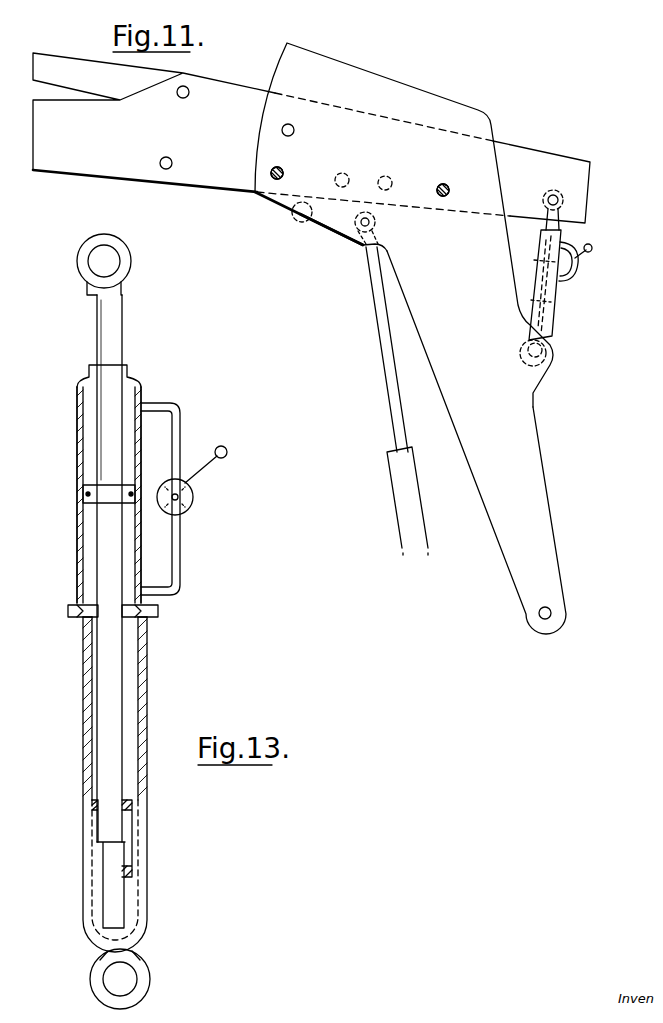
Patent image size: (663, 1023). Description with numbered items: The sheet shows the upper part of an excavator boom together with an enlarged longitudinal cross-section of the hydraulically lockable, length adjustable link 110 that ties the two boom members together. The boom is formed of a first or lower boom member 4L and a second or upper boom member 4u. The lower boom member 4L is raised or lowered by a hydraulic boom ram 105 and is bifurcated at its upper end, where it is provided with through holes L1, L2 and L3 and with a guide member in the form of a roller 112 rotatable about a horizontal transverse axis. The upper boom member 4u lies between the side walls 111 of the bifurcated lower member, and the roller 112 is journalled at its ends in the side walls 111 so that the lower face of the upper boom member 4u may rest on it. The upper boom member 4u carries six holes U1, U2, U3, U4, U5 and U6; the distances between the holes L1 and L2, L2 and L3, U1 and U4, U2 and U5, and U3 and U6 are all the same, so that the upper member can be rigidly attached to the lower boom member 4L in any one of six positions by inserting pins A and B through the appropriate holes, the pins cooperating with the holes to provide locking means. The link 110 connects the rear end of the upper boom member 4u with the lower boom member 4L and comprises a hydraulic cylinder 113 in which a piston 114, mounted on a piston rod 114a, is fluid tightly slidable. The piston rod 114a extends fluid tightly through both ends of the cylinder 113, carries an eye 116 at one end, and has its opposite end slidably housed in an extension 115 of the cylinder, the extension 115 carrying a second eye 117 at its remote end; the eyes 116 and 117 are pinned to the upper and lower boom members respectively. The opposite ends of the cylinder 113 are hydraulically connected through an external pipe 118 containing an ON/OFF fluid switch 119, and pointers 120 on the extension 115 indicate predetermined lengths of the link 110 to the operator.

In FIG. 11, the upper boom member 4u is at (218, 93).
In FIG. 11, the lower boom member 4L is at (522, 508).
In FIG. 11, the hole U1 is at (163, 166).
In FIG. 11, the hole U2 is at (272, 178).
In FIG. 11, the hole U3 is at (388, 177).
In FIG. 11, the hole U4 is at (345, 172).
In FIG. 11, the hole U5 is at (448, 187).
In FIG. 11, the hole U6 is at (560, 197).
In FIG. 11, the through hole L1 is at (279, 180).
In FIG. 11, the through hole L2 is at (443, 196).
In FIG. 11, the through hole L3 is at (290, 123).
In FIG. 11, the pin A is at (279, 167).
In FIG. 11, the pin B is at (447, 186).
In FIG. 11, the hydraulic boom ram 105 is at (403, 483).
In FIG. 11, the length adjustable link 110 is at (556, 320).
In FIG. 13, the length adjustable link 110 is at (133, 377).
In FIG. 11, the side walls 111 is at (340, 236).
In FIG. 11, the roller 112 is at (300, 222).
In FIG. 13, the hydraulic cylinder 113 is at (78, 397).
In FIG. 13, the piston 114 is at (103, 496).
In FIG. 13, the piston rod 114a is at (108, 457).
In FIG. 13, the extension 115 is at (143, 680).
In FIG. 13, the eye 116 is at (113, 263).
In FIG. 13, the eye 117 is at (132, 980).
In FIG. 13, the external pipe 118 is at (178, 435).
In FIG. 11, the fluid switch 119 is at (582, 265).
In FIG. 13, the fluid switch 119 is at (193, 497).
In FIG. 13, the pointers 120 is at (134, 872).